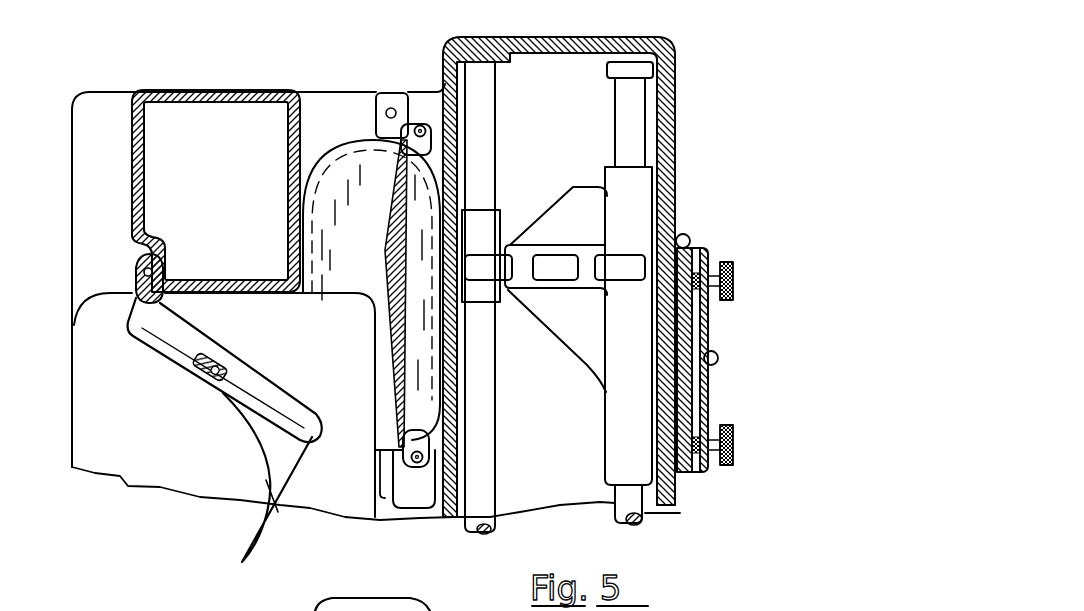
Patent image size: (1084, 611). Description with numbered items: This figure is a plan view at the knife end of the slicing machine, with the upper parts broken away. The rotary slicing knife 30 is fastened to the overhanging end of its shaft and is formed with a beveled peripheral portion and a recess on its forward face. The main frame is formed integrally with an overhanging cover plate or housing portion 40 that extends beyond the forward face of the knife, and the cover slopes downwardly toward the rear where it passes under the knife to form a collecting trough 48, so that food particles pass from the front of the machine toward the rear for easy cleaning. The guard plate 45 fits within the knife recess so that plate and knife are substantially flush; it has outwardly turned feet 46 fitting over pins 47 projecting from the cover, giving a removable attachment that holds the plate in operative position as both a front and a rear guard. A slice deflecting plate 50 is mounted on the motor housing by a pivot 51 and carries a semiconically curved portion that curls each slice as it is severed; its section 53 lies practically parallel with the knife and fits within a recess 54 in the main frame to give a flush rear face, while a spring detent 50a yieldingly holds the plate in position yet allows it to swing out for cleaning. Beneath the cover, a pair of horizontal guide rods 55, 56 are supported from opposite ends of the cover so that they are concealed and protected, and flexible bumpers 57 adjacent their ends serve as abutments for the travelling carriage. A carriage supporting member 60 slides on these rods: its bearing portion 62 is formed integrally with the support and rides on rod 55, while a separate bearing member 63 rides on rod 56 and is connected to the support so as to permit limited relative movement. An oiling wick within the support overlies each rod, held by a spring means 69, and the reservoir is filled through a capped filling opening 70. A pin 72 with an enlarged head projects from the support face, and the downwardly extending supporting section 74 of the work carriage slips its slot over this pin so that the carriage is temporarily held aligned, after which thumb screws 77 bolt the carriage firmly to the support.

The rotary slicing knife 30 is at (395, 252).
The cover plate or housing portion 40 is at (678, 62).
The guard plate 45 is at (404, 210).
The outwardly turned feet 46 is at (432, 148).
The pins 47 is at (426, 128).
The collecting trough 48 is at (362, 270).
The slice deflecting plate 50 is at (248, 440).
The spring detent 50a is at (223, 377).
The pivot 51 is at (136, 272).
The section 53 is at (246, 538).
The recess 54 is at (378, 475).
The guide rod 55 is at (643, 517).
The guide rod 56 is at (494, 528).
The bumpers 57 is at (674, 89).
The carriage supporting member 60 is at (592, 362).
The bearing portion 62 is at (638, 204).
The bearing member 63 is at (493, 222).
The spring means 69 is at (553, 268).
The capped filling opening 70 is at (690, 238).
The pin 72 is at (718, 358).
The supporting section 74 is at (710, 399).
The thumb screws 77 is at (734, 282).